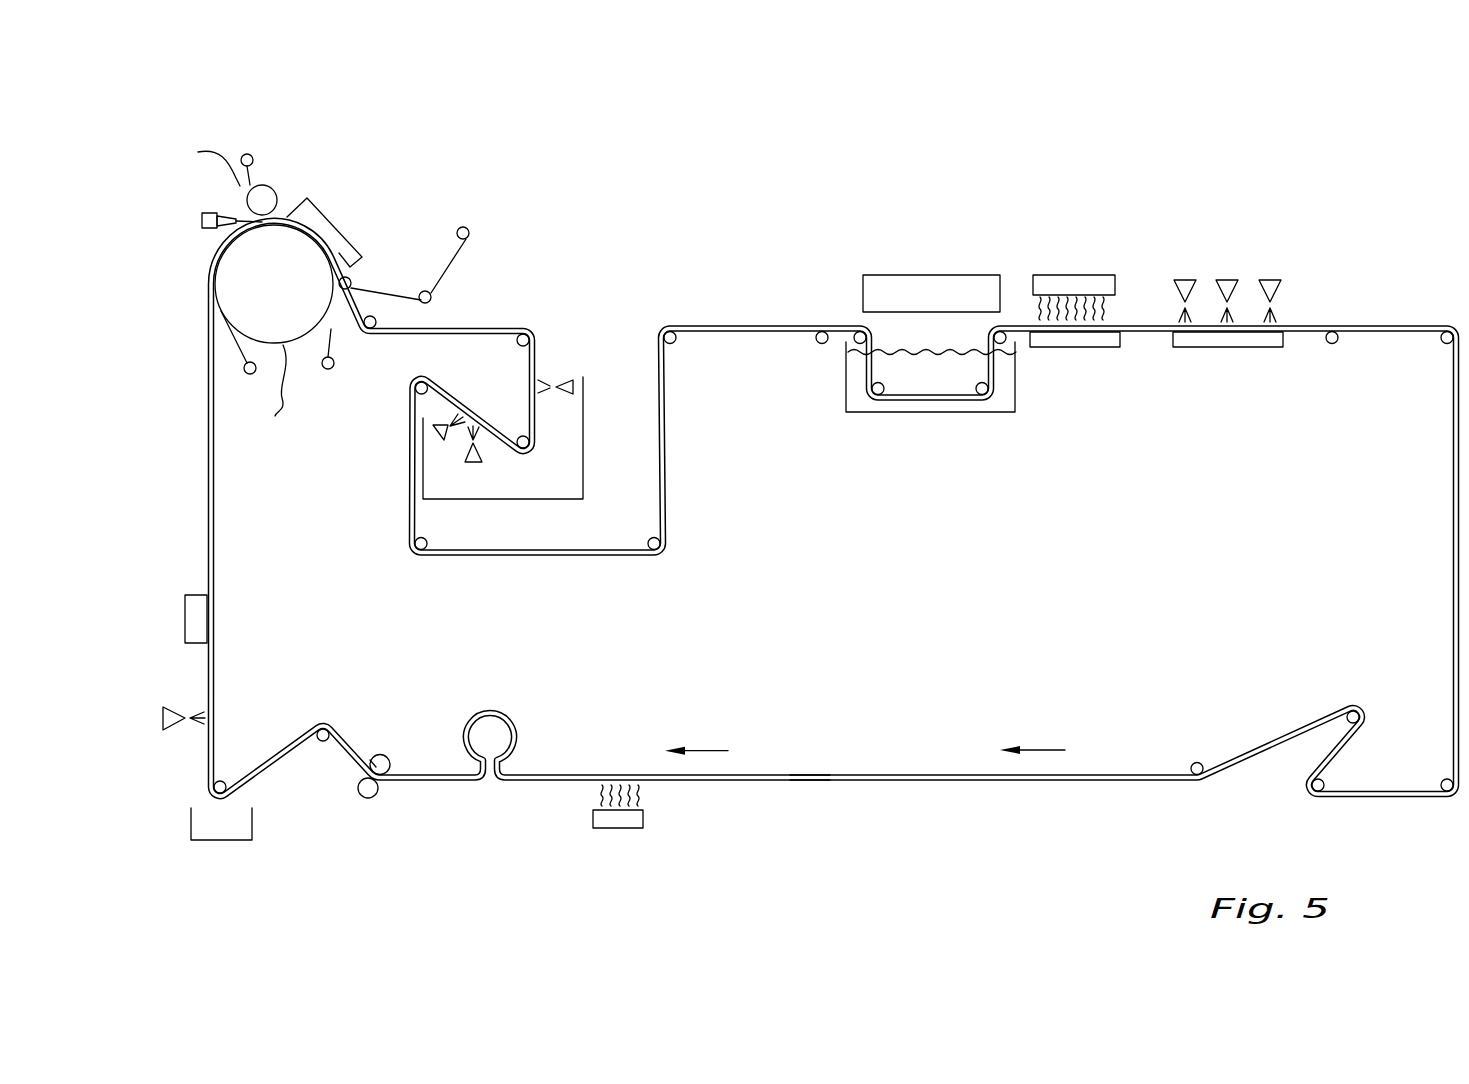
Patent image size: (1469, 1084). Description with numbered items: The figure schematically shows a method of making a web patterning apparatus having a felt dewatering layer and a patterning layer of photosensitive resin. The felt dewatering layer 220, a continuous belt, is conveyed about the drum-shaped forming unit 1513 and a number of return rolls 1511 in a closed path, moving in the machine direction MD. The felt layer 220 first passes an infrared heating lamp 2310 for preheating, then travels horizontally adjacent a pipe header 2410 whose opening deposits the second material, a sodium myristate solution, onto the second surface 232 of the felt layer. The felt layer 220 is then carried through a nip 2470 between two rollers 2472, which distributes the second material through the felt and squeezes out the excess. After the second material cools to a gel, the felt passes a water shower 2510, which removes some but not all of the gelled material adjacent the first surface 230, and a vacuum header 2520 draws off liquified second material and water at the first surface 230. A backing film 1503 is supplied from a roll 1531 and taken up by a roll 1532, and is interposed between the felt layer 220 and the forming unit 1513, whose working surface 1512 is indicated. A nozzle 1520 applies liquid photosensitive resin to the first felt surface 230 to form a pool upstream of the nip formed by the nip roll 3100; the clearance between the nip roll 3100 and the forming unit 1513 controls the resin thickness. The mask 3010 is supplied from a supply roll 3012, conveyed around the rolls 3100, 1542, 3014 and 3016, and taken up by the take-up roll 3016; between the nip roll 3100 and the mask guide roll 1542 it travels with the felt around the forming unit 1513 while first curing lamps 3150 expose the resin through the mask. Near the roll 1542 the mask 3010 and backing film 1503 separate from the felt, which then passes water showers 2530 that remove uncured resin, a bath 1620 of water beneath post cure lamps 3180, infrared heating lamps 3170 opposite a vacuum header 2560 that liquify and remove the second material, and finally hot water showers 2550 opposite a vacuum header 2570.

The felt dewatering layer 220 is at (808, 800).
The first surface 230 is at (927, 780).
The second surface 232 is at (810, 775).
The machine direction MD is at (1040, 750).
The backing film 1503 is at (236, 344).
The return rolls 1511 is at (372, 330).
The working surface 1512 is at (283, 410).
The forming unit 1513 is at (297, 300).
The nozzle 1520 is at (204, 212).
The roll 1531 is at (245, 373).
The roll 1532 is at (326, 370).
The mask guide roll 1542 is at (350, 281).
The bath 1620 is at (872, 412).
The infrared heating lamp 2310 is at (630, 829).
The pipe header 2410 is at (514, 717).
The nip 2470 is at (362, 741).
The rollers 2472 is at (384, 756).
The water shower 2510 is at (173, 732).
The vacuum header 2520 is at (197, 600).
The water showers 2530 is at (567, 377).
The hot water showers 2550 is at (1267, 280).
The vacuum header 2560 is at (1075, 346).
The vacuum header 2570 is at (1228, 346).
The mask 3010 is at (515, 257).
The supply roll 3012 is at (252, 157).
The roll 3014 is at (431, 302).
The take-up roll 3016 is at (468, 230).
The nip roll 3100 is at (269, 195).
The first curing lamps 3150 is at (347, 217).
The infrared heating lamps 3170 is at (1072, 275).
The post cure lamps 3180 is at (893, 276).